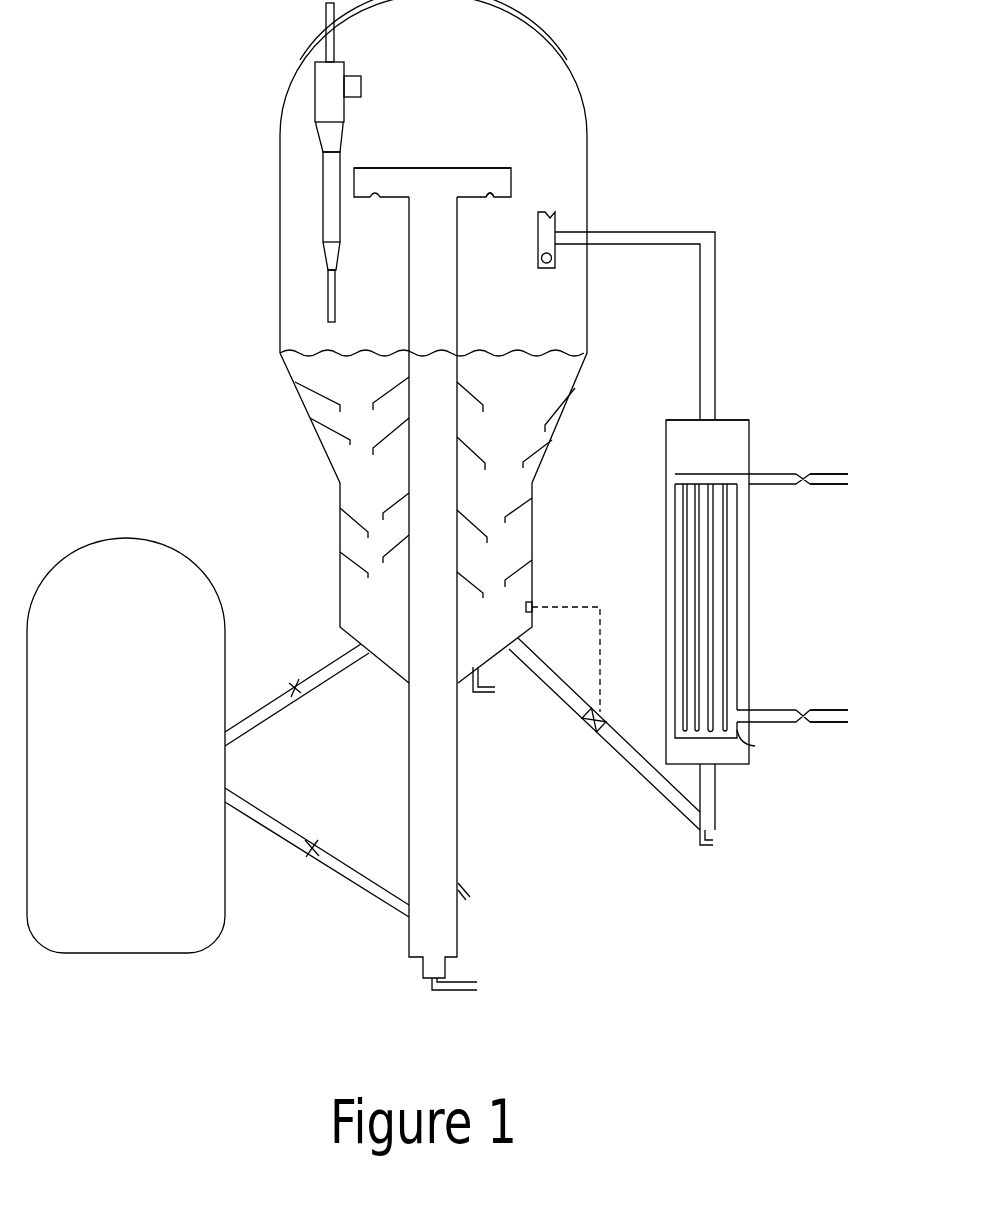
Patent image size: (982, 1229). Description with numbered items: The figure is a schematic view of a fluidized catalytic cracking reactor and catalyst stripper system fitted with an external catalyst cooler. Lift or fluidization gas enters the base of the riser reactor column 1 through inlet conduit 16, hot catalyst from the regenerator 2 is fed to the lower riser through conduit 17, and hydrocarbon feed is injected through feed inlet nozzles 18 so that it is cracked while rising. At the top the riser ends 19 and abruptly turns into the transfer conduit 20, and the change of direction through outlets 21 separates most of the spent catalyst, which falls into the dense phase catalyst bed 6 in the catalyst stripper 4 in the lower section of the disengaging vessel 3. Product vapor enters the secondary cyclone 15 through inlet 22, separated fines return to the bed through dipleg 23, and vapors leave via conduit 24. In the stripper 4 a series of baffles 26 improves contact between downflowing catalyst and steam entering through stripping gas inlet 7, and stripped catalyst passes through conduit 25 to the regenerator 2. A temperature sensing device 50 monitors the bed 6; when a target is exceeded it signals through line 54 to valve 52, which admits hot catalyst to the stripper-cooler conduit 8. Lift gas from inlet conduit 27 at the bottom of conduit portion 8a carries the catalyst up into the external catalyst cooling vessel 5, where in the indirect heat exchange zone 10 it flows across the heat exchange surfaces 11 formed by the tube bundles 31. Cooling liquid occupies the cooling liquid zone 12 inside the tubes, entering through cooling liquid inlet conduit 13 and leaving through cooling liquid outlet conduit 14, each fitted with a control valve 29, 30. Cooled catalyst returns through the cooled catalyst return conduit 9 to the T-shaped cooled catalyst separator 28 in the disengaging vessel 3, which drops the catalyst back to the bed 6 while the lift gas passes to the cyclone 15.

The riser reactor column 1 is at (473, 808).
The regenerator 2 is at (126, 766).
The disengaging vessel 3 is at (570, 52).
The catalyst stripper 4 is at (322, 505).
The external catalyst cooling vessel 5 is at (755, 553).
The dense phase catalyst bed 6 is at (553, 388).
The stripping gas inlet 7 is at (496, 700).
The stripper-cooler conduit 8 is at (645, 785).
The stripper-cooler conduit portion 8a is at (717, 803).
The cooled catalyst return conduit 9 is at (718, 302).
The indirect heat exchange zone 10 is at (735, 432).
The indirect heat exchange surfaces 11 is at (675, 479).
The cooling liquid zone 12 is at (752, 748).
The cooling liquid inlet conduit 13 is at (844, 495).
The cooling liquid outlet conduit 14 is at (855, 716).
The secondary cyclone 15 is at (303, 122).
The inlet conduit 16 is at (480, 985).
The conduit 17 is at (338, 878).
The feed inlet nozzle 18 is at (478, 898).
The end of riser 19 is at (432, 168).
The transfer conduit 20 is at (472, 178).
The outlet 21 is at (494, 199).
The cyclone inlet 22 is at (362, 88).
The dipleg 23 is at (336, 302).
The conduit 24 is at (326, 16).
The conduit 25 is at (272, 715).
The baffles 26 is at (310, 385).
The lift gas inlet conduit 27 is at (716, 843).
The cooled catalyst separator 28 is at (537, 248).
The control valve 29 is at (806, 472).
The control valve 30 is at (806, 708).
The heat exchange tubes 31 is at (686, 536).
The temperature sensing device 50 is at (533, 606).
The valve 52 is at (591, 733).
The line 54 is at (603, 662).